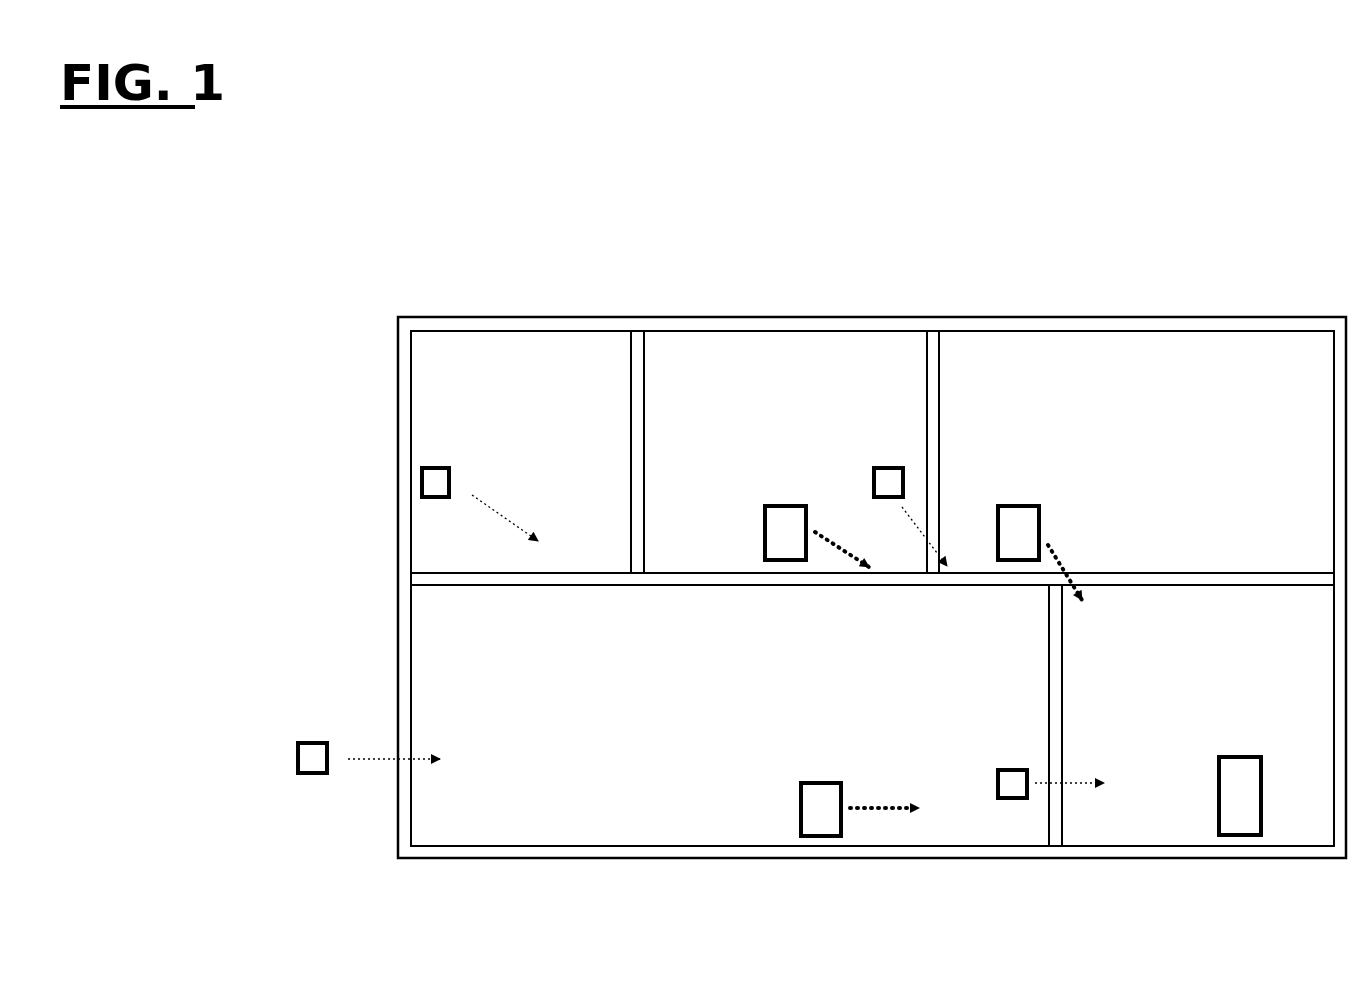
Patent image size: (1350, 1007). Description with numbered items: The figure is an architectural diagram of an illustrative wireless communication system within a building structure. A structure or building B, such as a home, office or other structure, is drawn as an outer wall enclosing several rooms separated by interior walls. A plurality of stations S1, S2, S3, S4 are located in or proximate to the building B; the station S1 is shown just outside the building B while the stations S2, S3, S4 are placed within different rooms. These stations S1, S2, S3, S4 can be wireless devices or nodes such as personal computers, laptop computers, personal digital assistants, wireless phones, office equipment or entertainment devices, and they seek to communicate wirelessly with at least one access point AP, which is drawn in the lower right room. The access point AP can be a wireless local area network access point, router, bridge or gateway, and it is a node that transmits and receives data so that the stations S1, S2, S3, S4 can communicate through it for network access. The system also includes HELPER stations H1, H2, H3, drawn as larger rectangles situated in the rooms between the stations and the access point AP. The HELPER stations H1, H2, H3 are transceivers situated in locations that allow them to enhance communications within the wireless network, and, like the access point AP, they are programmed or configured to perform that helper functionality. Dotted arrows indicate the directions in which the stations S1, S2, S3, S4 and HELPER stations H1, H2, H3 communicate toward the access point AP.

The building B is at (552, 317).
The station S1 is at (298, 757).
The station S2 is at (412, 470).
The station S3 is at (874, 483).
The station S4 is at (998, 773).
The HELPER station H1 is at (767, 508).
The HELPER station H2 is at (1018, 507).
The HELPER station H3 is at (803, 783).
The access point AP is at (1247, 818).